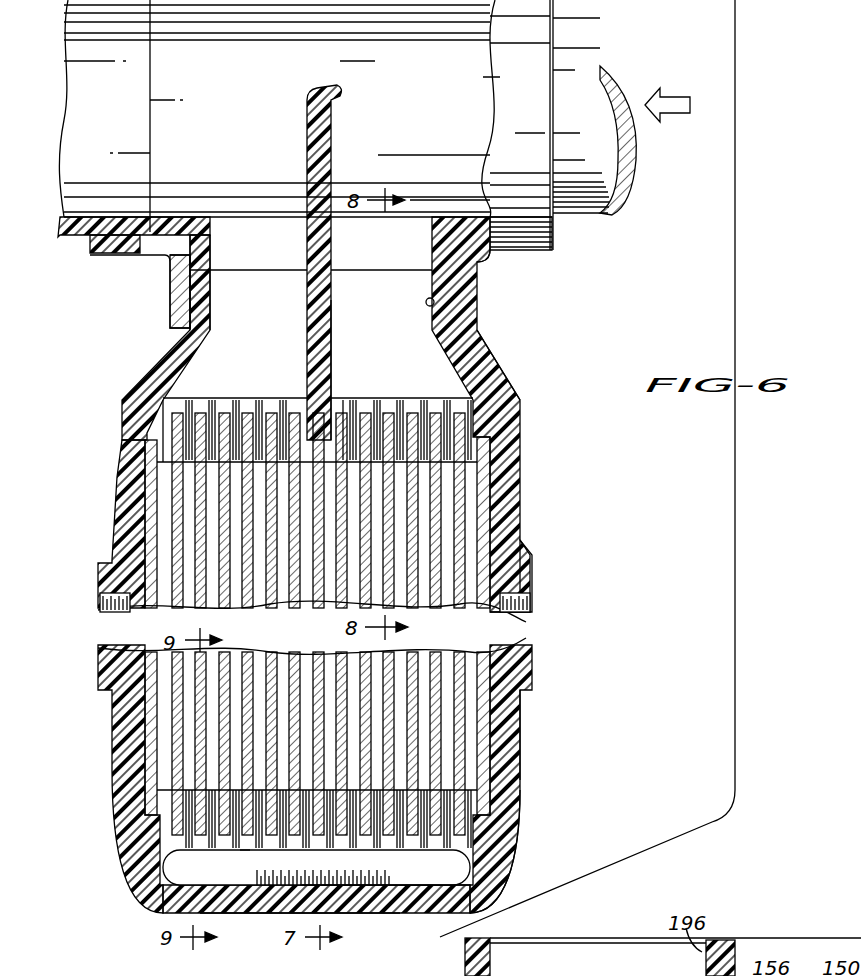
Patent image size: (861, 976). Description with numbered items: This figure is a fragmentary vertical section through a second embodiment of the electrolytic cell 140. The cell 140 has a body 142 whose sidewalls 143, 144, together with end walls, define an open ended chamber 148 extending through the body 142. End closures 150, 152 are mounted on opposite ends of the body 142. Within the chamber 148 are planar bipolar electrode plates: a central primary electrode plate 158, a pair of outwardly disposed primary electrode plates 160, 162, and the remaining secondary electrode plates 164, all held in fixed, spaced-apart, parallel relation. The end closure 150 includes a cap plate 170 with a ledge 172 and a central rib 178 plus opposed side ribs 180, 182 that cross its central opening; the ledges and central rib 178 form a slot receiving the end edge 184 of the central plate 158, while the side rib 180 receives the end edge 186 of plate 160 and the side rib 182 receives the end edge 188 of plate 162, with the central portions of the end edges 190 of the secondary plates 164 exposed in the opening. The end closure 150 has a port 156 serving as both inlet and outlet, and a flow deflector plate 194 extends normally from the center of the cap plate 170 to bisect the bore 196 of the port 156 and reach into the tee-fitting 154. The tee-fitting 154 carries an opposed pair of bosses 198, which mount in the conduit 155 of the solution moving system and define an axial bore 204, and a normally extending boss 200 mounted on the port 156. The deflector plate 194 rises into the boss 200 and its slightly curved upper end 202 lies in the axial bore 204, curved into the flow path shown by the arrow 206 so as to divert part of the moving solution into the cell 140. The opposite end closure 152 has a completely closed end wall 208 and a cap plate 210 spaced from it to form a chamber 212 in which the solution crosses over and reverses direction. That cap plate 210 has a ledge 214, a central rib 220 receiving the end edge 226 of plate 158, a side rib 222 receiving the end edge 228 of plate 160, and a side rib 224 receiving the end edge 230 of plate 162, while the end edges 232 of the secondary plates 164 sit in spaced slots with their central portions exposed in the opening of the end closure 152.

The electrolytic cell 140 is at (545, 505).
The cell body 142 is at (510, 636).
The sidewall 143 is at (118, 608).
The sidewall 144 is at (530, 598).
The open ended chamber 148 is at (500, 540).
The end closure 150 is at (495, 360).
The end closure 152 is at (266, 922).
The tee-fitting 154 is at (500, 262).
The conduit 155 is at (627, 190).
The port 156 is at (197, 345).
The central primary electrode plate 158 is at (316, 660).
The outwardly disposed primary electrode plate 160 is at (147, 538).
The outwardly disposed primary electrode plate 162 is at (485, 712).
The secondary electrode plates 164 is at (190, 772).
The cap plate 170 is at (195, 395).
The ledge 172 is at (283, 398).
The central rib 178 is at (340, 410).
The side rib 180 is at (140, 400).
The side rib 182 is at (503, 400).
The end edge 184 is at (333, 357).
The end edge 186 is at (150, 445).
The end edge 188 is at (493, 457).
The end edges 190 is at (248, 412).
The flow deflector plate 194 is at (338, 240).
The bore 196 is at (432, 304).
The bosses 198 is at (553, 230).
The boss 200 is at (178, 312).
The curved upper end 202 is at (341, 88).
The axial bore 204 is at (264, 91).
The arrow 206 is at (663, 118).
The end wall 208 is at (417, 903).
The cap plate 210 is at (178, 880).
The chamber 212 is at (373, 887).
The ledge 214 is at (247, 852).
The central rib 220 is at (290, 838).
The side rib 222 is at (147, 843).
The side rib 224 is at (490, 834).
The end edge 226 is at (310, 838).
The end edge 228 is at (145, 803).
The end edge 230 is at (487, 807).
The end edges 232 is at (230, 866).